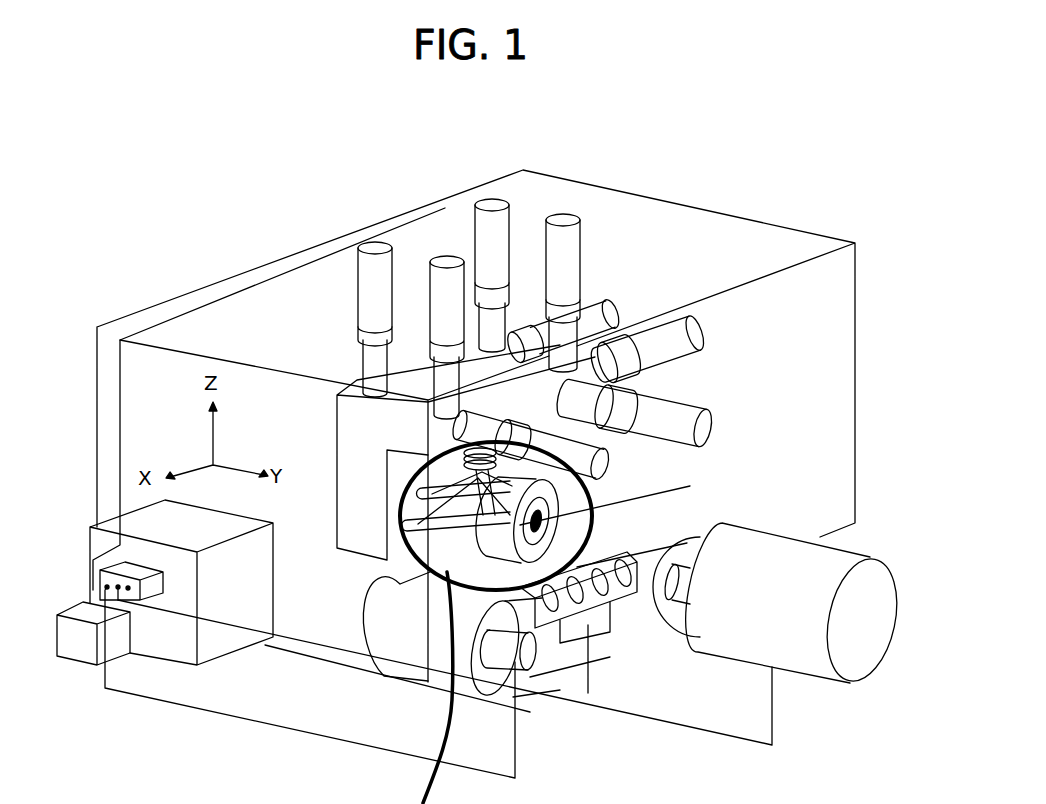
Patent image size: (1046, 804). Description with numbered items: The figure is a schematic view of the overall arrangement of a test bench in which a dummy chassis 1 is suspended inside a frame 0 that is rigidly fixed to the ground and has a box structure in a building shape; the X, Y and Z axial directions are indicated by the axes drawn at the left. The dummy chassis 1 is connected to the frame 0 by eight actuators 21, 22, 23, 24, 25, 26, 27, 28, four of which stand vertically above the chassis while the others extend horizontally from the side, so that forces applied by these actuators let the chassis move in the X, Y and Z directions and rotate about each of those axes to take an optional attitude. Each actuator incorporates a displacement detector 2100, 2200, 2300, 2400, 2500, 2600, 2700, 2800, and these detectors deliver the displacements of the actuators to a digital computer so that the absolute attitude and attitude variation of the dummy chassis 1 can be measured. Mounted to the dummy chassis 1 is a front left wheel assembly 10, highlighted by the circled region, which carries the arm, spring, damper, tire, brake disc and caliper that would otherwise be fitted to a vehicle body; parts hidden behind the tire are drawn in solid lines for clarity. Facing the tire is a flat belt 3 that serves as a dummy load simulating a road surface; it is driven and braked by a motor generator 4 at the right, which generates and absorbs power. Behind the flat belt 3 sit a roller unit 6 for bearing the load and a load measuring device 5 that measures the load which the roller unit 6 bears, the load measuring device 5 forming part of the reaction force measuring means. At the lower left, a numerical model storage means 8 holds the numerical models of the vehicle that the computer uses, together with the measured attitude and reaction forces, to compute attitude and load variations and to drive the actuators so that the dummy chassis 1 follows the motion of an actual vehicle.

The frame 0 is at (737, 224).
The dummy chassis 1 is at (342, 412).
The flat belt 3 is at (378, 630).
The motor generator 4 is at (870, 562).
The load measuring device 5 is at (605, 640).
The roller unit 6 is at (660, 541).
The numerical model storage means 8 is at (72, 602).
The front left wheel assembly 10 is at (420, 562).
The actuator 21 is at (330, 300).
The actuator 22 is at (433, 297).
The actuator 23 is at (456, 245).
The actuator 24 is at (598, 261).
The actuator 25 is at (594, 250).
The actuator 26 is at (684, 341).
The actuator 27 is at (672, 411).
The actuator 28 is at (593, 454).
The displacement detector 2100 is at (360, 332).
The displacement detector 2200 is at (373, 361).
The displacement detector 2300 is at (488, 292).
The displacement detector 2400 is at (564, 305).
The displacement detector 2500 is at (530, 333).
The displacement detector 2600 is at (640, 358).
The displacement detector 2700 is at (622, 400).
The displacement detector 2800 is at (582, 440).